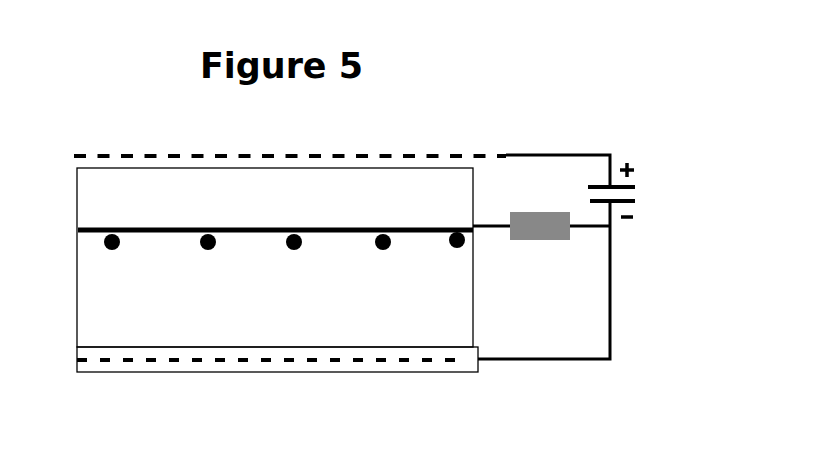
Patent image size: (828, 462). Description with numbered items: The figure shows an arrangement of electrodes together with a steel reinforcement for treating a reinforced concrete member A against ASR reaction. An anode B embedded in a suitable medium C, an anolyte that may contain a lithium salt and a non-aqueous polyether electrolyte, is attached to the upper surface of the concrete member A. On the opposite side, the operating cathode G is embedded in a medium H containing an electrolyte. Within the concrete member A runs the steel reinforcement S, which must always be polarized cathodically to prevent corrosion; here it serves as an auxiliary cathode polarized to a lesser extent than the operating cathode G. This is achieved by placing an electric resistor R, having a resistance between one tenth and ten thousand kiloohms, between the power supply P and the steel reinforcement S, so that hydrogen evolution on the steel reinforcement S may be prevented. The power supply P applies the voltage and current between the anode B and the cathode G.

The medium C is at (289, 133).
The anode B is at (547, 154).
The power supply P is at (632, 192).
The steel reinforcement S is at (294, 250).
The electric resistor R is at (560, 251).
The medium H is at (277, 270).
The concrete member A is at (275, 257).
The cathode G is at (343, 283).